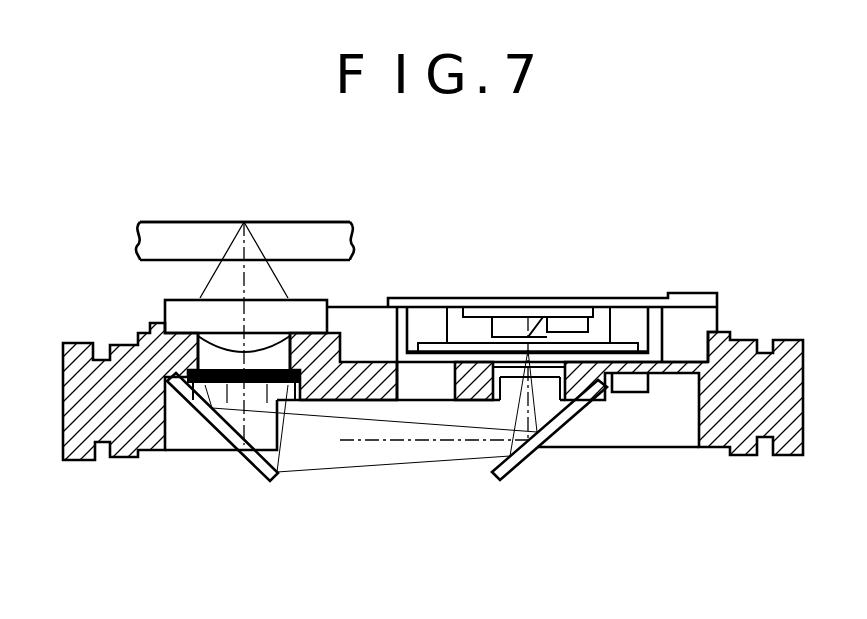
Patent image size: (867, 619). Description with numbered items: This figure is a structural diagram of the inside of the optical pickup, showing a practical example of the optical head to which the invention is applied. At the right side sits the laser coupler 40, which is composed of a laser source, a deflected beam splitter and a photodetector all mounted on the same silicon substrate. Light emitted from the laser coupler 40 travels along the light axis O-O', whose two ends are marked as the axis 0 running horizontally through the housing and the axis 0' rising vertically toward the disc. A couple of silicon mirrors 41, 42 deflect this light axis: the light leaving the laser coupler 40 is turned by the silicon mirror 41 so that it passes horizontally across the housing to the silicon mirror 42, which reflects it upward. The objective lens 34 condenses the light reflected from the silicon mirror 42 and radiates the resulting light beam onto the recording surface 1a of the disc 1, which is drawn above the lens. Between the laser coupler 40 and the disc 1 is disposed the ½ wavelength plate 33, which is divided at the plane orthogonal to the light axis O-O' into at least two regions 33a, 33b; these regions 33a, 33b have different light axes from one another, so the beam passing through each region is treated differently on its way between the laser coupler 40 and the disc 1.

The disc 1 is at (341, 238).
The recording surface 1a is at (290, 221).
The light axis 0' is at (262, 261).
The objective lens 34 is at (167, 312).
The ½ wavelength plate 33 is at (162, 378).
The region 33a is at (228, 404).
The region 33b is at (268, 404).
The silicon mirror 42 is at (184, 450).
The silicon mirror 41 is at (530, 447).
The light axis 0 is at (371, 414).
The laser coupler 40 is at (548, 300).